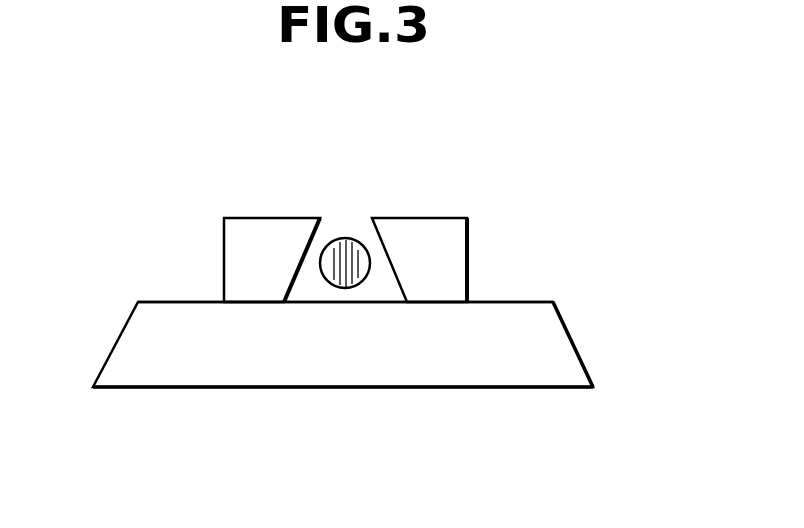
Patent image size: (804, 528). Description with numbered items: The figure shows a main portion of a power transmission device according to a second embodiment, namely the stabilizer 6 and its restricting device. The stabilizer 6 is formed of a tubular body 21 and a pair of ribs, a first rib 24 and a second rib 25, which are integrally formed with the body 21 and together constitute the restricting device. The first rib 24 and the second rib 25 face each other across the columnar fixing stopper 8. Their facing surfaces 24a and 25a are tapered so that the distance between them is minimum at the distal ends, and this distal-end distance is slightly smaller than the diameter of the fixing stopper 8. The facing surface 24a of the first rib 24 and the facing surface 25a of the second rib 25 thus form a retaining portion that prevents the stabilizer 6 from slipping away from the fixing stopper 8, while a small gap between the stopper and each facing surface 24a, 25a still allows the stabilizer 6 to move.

The stabilizer 6 is at (577, 342).
The tubular body 21 is at (355, 360).
The first rib 24 is at (224, 238).
The facing surface of the first rib 24a is at (326, 226).
The second rib 25 is at (467, 242).
The facing surface of the second rib 25a is at (372, 227).
The fixing stopper 8 is at (345, 238).